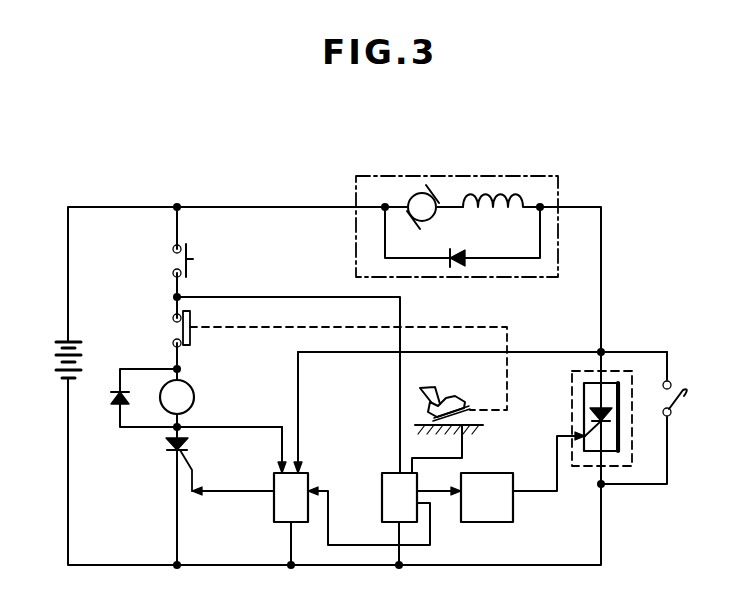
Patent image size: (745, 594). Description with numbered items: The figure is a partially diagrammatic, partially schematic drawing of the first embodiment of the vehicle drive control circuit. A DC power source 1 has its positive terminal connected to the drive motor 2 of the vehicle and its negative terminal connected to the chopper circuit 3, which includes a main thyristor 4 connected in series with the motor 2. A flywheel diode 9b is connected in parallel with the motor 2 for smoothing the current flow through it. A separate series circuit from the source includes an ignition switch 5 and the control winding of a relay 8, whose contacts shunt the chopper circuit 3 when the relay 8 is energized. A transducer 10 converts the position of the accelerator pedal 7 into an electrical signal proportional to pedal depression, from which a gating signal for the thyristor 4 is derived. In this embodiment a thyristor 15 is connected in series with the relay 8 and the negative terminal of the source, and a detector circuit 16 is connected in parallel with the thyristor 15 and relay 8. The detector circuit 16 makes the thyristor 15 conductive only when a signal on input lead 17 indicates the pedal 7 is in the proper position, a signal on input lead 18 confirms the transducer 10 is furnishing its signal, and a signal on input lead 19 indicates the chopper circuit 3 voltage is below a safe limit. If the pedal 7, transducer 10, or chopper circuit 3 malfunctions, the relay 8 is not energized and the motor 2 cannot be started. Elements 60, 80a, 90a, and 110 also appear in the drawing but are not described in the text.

The DC power source 1 is at (54, 364).
The drive motor 2 is at (462, 176).
The chopper circuit 3 is at (632, 415).
The main thyristor 4 is at (585, 413).
The ignition switch 5 is at (173, 258).
The accelerator pedal 7 is at (470, 403).
The relay 8 is at (191, 388).
The flywheel diode 9b is at (456, 267).
The transducer 10 is at (392, 474).
The thyristor 15 is at (166, 443).
The detector circuit 16 is at (273, 512).
The input lead 17 is at (280, 453).
The input lead 18 is at (330, 492).
The input lead 19 is at (300, 427).
The push-button switch 60 is at (174, 330).
The switch 80a is at (669, 418).
The diode 90a is at (118, 390).
The timing circuit 110 is at (511, 508).